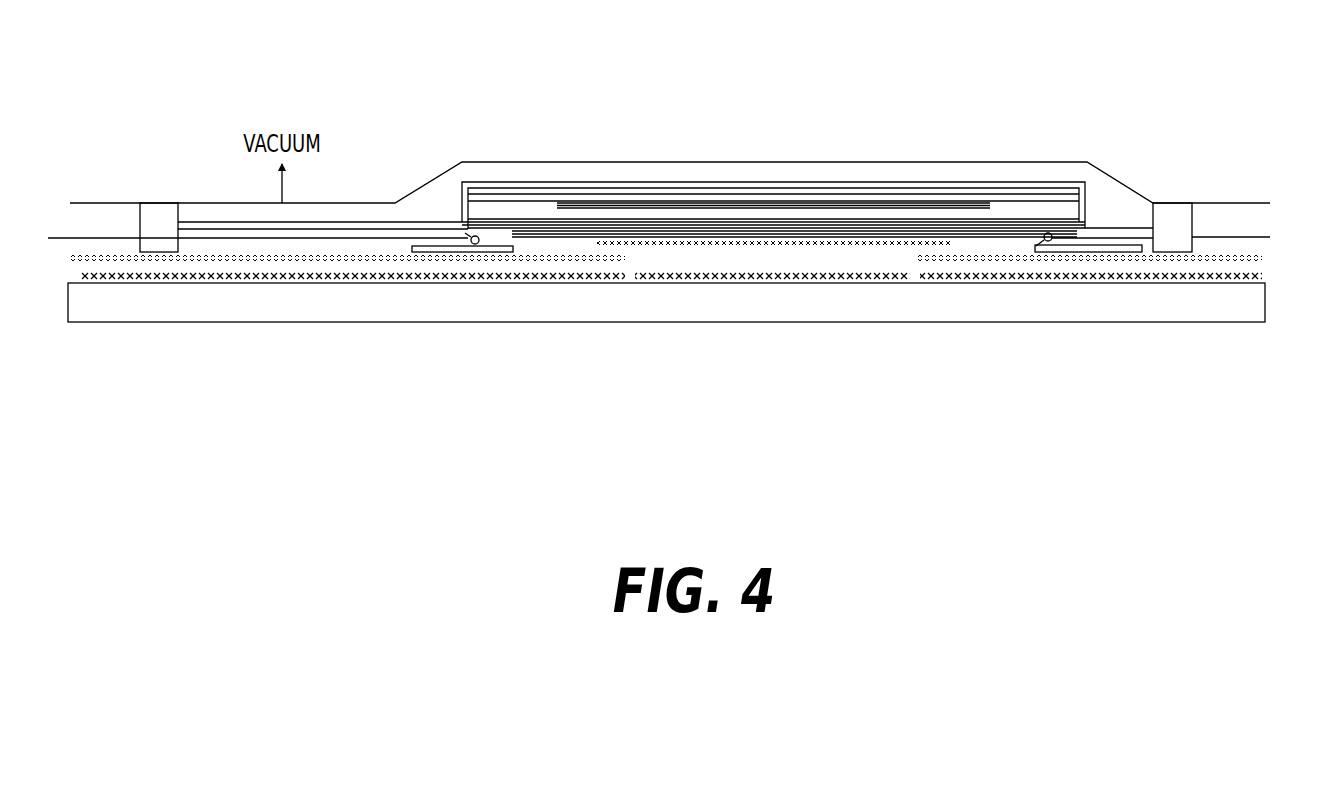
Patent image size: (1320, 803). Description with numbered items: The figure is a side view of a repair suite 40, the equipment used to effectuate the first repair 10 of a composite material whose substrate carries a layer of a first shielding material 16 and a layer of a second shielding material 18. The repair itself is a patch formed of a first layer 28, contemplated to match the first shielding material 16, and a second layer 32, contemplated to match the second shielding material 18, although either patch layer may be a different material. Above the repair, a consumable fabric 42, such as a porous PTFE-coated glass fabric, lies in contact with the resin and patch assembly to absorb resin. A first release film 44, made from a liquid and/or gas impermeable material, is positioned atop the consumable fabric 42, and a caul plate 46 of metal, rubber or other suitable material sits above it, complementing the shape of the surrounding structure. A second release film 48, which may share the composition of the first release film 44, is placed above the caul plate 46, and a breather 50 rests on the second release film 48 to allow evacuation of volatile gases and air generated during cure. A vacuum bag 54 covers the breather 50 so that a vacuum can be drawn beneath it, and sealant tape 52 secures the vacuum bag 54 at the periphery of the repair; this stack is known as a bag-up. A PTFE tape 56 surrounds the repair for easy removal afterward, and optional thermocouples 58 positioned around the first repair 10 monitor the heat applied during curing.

The first repair 10 is at (876, 178).
The first shielding material 16 is at (597, 278).
The second shielding material 18 is at (275, 258).
The first layer of the patch 28 is at (838, 278).
The second layer of the patch 32 is at (773, 245).
The repair suite 40 is at (994, 74).
The consumable fabric 42 is at (957, 215).
The first release film 44 is at (760, 220).
The caul plate 46 is at (735, 200).
The second release film 48 is at (668, 193).
The breather 50 is at (432, 218).
The sealant tape 52 is at (165, 212).
The vacuum bag 54 is at (508, 162).
The tape 56 is at (428, 250).
The thermocouples 58 is at (478, 245).